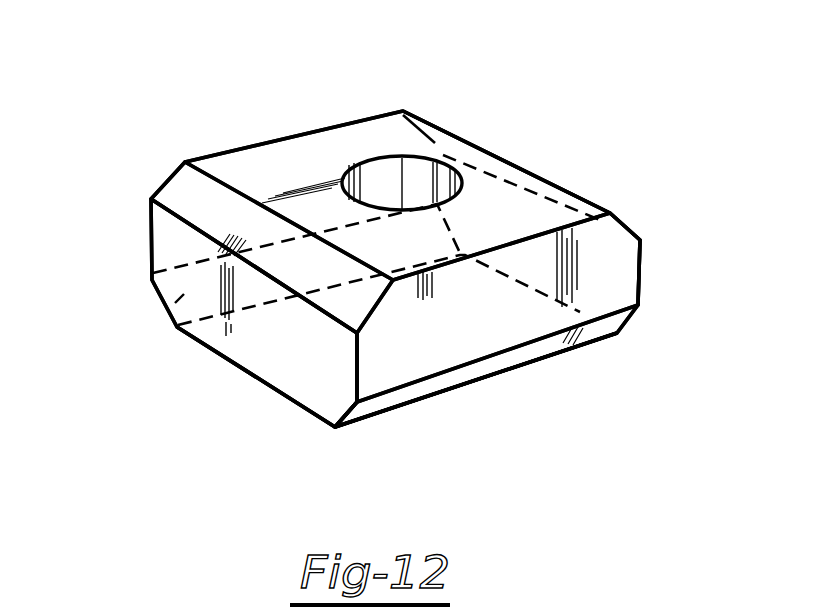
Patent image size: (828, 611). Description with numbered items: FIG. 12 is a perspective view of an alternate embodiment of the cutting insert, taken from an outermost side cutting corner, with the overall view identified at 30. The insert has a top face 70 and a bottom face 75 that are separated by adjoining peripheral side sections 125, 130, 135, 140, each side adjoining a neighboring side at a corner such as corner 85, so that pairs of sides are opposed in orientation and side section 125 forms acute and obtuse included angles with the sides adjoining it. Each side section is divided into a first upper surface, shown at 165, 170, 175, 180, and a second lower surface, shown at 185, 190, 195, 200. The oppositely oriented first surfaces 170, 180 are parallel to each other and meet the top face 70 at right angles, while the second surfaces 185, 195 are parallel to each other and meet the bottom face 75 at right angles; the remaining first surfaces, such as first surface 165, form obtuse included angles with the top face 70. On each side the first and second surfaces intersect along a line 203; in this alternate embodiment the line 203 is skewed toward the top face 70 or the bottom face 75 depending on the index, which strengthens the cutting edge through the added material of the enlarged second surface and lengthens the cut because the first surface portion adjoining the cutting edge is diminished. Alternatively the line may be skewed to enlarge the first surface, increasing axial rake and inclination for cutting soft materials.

The clamp block 30 is at (450, 61).
The top face 70 is at (480, 177).
The bottom face 75 is at (378, 383).
The corner 85 is at (350, 337).
The peripheral side section 125 is at (583, 190).
The peripheral side section 130 is at (508, 372).
The peripheral side section 135 is at (300, 300).
The peripheral side section 140 is at (172, 267).
The first upper surface 165 is at (537, 160).
The first upper surface 170 is at (610, 285).
The first upper surface 175 is at (182, 197).
The first upper surface 180 is at (281, 167).
The second surface 185 is at (613, 250).
The second surface 190 is at (565, 350).
The second surface 195 is at (322, 395).
The second surface 200 is at (162, 310).
The line 203 is at (610, 327).